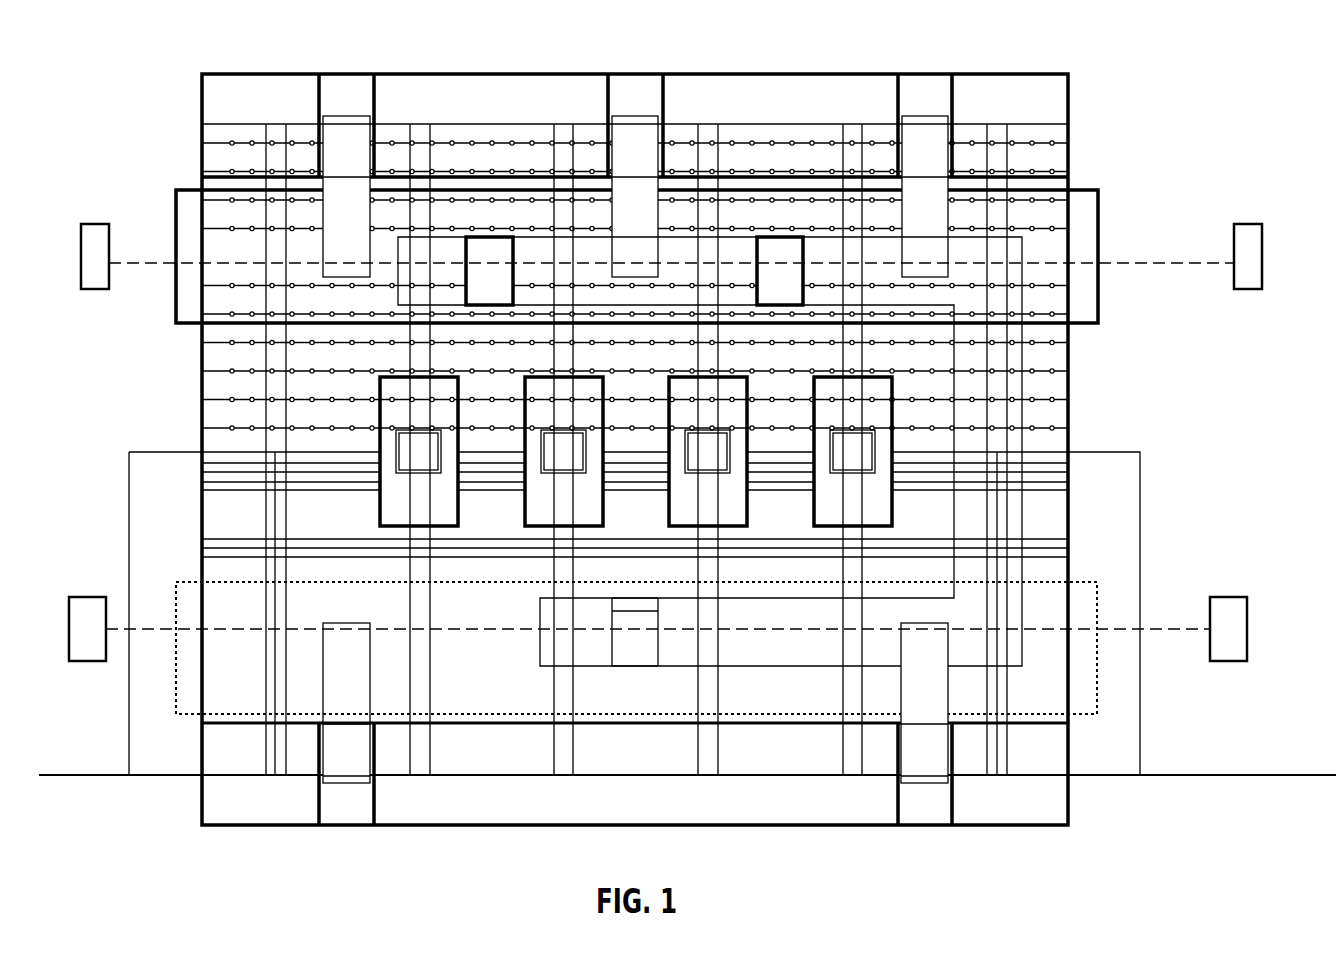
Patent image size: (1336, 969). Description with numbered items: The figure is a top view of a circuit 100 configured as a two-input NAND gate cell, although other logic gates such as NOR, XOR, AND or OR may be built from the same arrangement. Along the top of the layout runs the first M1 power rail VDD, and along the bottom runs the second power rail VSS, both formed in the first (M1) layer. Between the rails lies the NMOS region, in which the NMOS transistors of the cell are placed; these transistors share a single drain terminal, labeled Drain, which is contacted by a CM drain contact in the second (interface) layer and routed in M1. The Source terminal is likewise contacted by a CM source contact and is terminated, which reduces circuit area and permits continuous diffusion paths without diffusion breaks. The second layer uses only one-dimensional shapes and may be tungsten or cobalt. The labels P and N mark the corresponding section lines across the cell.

The circuit 100 is at (1197, 62).
The M1 power rail VDD is at (635, 99).
The power rail VSS is at (635, 774).
The NMOS transistor NMOS is at (636, 648).
The drain Drain is at (635, 656).
The source Source is at (923, 703).
The P cross-section line P is at (671, 256).
The N cross-section line N is at (658, 629).